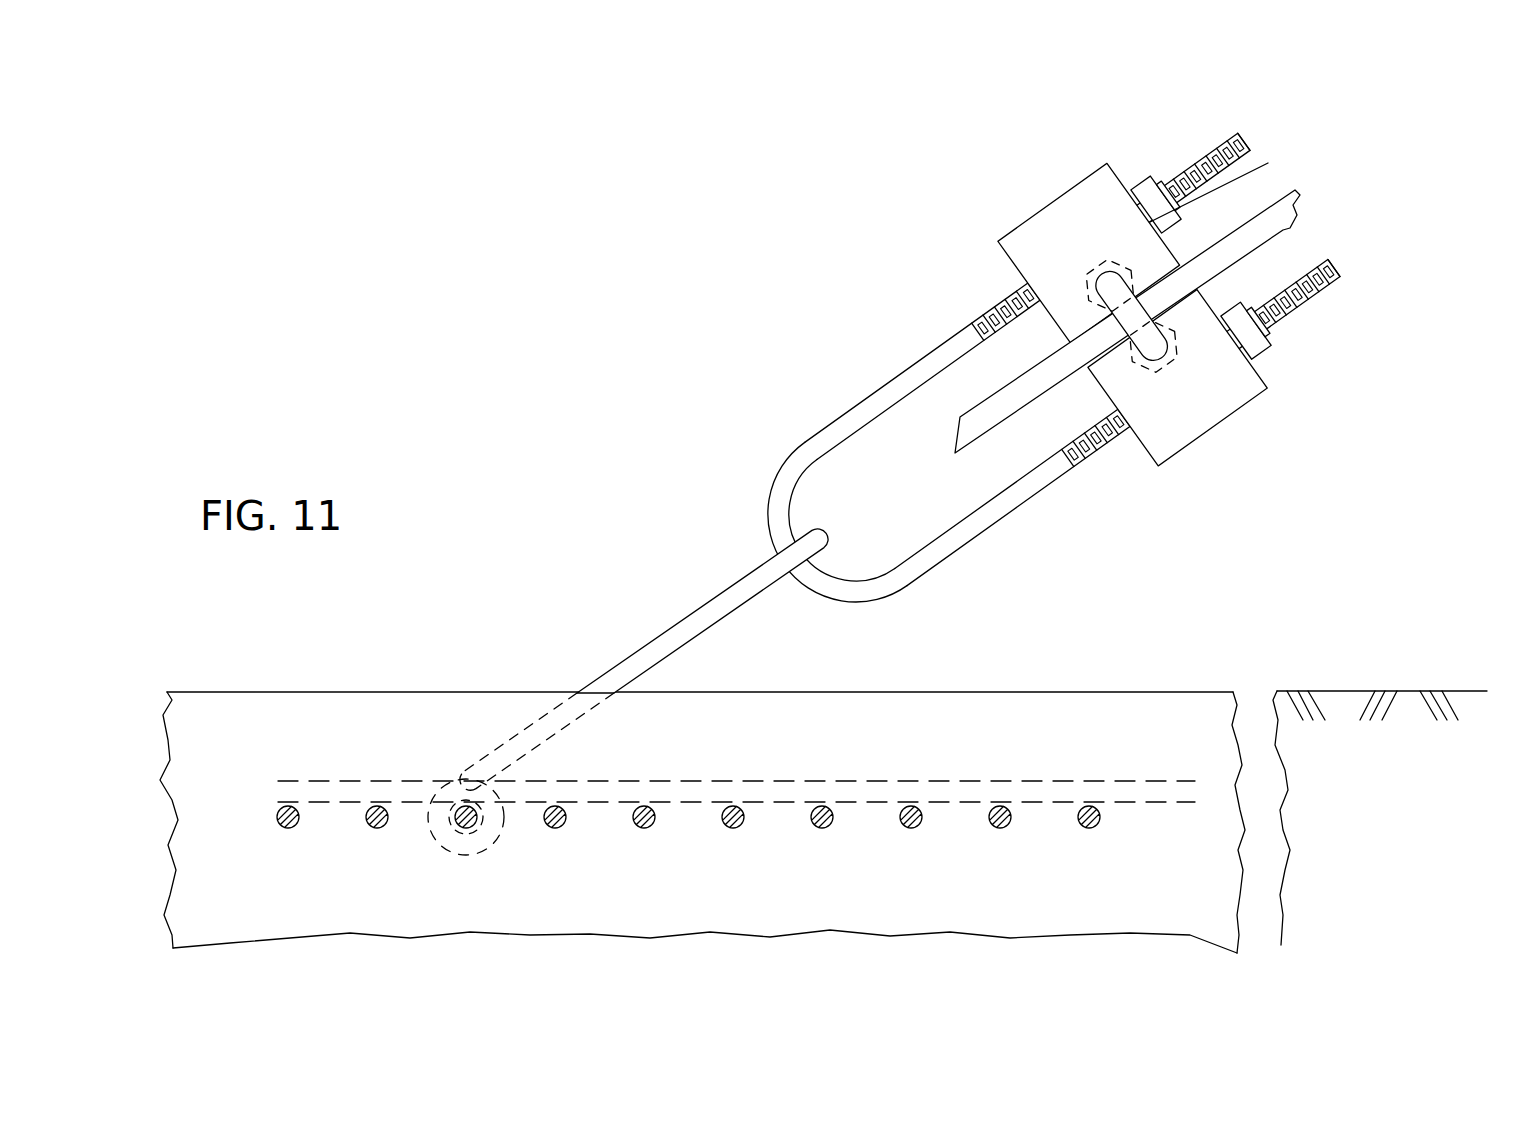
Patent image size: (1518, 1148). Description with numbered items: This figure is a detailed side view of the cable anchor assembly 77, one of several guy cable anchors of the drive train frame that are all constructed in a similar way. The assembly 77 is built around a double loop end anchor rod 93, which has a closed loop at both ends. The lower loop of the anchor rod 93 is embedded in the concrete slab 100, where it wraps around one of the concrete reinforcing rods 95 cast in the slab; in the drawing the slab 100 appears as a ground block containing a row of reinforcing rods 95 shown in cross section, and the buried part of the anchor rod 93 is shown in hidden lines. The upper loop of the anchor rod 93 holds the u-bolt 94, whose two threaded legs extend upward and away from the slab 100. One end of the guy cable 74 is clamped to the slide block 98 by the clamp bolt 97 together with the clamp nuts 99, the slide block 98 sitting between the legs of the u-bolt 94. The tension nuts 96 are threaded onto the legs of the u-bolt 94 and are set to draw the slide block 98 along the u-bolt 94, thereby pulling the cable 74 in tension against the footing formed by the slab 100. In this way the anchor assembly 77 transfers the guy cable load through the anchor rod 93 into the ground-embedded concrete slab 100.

The cable 74 is at (1283, 230).
The cable anchor assembly 77 is at (1066, 352).
The double loop end anchor rod 93 is at (683, 612).
The u-bolt 94 is at (827, 422).
The concrete reinforcing rods 95 is at (1088, 803).
The tension nuts 96 is at (1243, 305).
The clamp bolt 97 is at (1130, 336).
The slide block 98 is at (1212, 433).
The clamp nuts 99 is at (1160, 313).
The concrete slab 100 is at (417, 693).